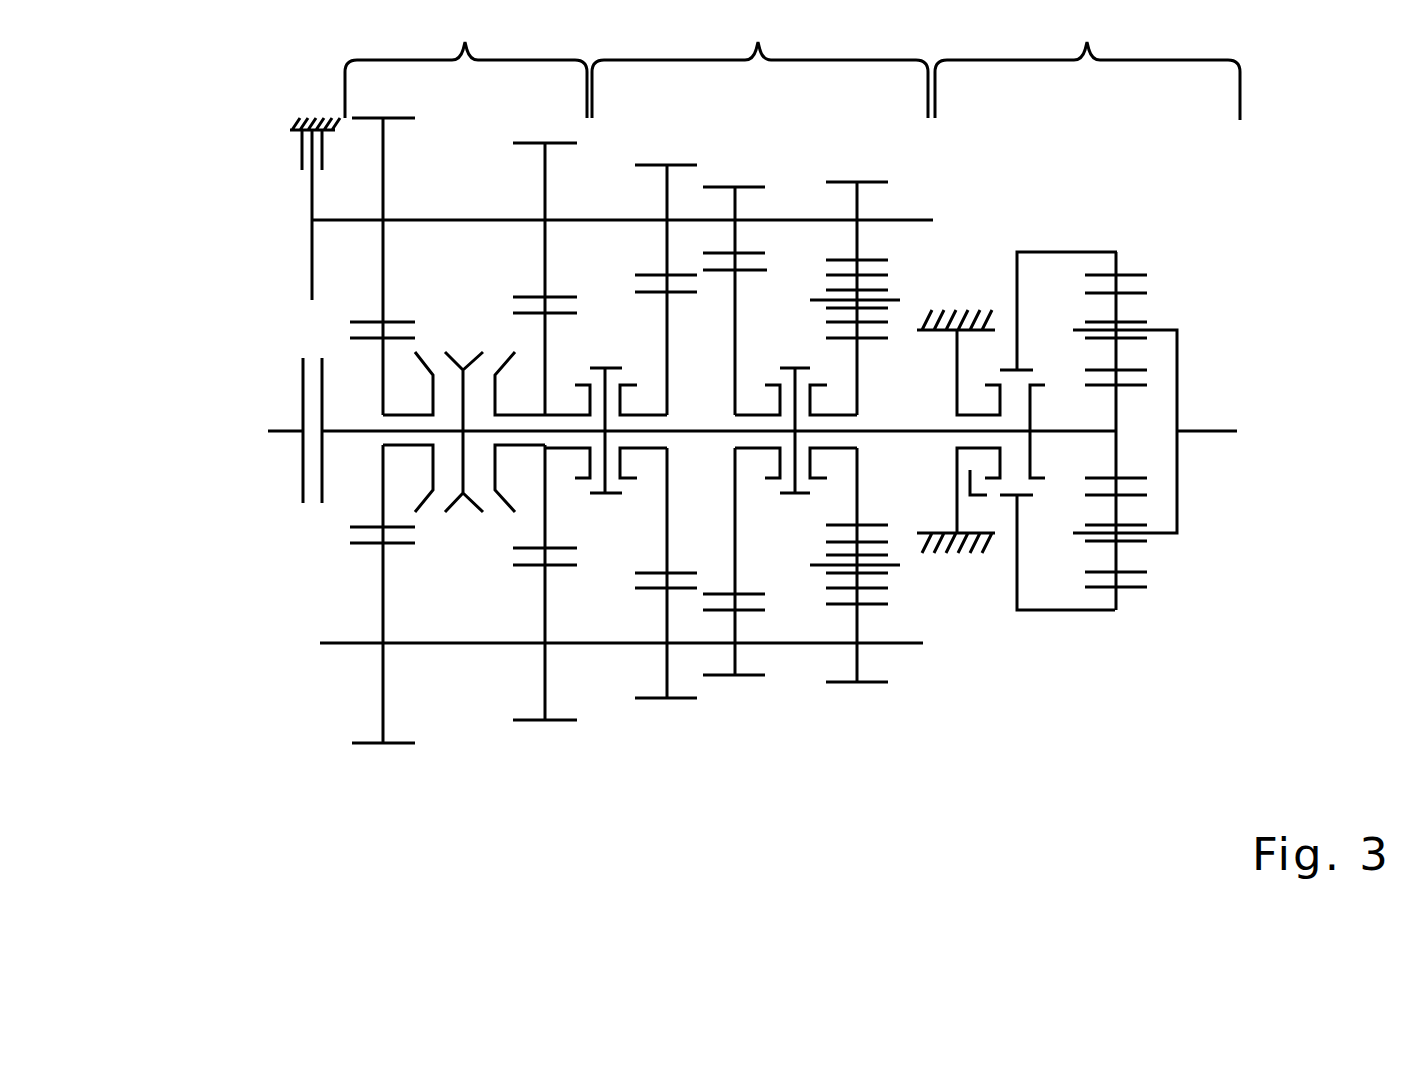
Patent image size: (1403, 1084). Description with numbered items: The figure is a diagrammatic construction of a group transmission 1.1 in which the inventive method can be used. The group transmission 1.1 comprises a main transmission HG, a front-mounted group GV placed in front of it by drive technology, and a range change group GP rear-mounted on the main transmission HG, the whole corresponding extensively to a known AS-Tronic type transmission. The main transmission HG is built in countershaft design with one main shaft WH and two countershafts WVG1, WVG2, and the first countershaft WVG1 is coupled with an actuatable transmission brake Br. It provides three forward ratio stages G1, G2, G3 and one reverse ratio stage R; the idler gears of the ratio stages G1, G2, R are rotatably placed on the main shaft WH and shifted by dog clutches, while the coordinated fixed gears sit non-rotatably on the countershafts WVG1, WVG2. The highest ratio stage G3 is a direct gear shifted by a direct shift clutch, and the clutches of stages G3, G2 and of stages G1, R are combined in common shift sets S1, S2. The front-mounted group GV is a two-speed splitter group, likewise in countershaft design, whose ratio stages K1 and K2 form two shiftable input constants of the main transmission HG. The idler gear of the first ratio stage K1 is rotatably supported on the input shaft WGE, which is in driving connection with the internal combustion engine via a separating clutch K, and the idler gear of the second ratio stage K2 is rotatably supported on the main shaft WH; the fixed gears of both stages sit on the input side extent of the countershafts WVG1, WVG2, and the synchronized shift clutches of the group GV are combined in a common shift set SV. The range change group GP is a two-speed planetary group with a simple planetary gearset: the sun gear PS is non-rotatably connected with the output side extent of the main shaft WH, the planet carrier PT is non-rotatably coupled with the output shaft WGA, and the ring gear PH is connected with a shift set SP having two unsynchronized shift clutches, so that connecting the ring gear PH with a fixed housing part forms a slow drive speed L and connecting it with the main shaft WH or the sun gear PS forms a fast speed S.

The front-mounted group GV is at (466, 61).
The main transmission HG is at (760, 61).
The range change group GP is at (1087, 62).
The transmission brake Br is at (293, 209).
The first ratio stage K1 is at (376, 430).
The second ratio stage K2 is at (536, 431).
The separating clutch K is at (295, 429).
The shift set SV is at (464, 412).
The third ratio stage G3 is at (554, 276).
The second ratio stage G2 is at (666, 415).
The first ratio stage G1 is at (735, 408).
The reverse ratio stage R is at (855, 413).
The shift set S1 is at (606, 412).
The shift set S2 is at (796, 412).
The shift set SP is at (990, 394).
The fast speed S is at (994, 500).
The slow drive speed L is at (978, 482).
The ring gear PH is at (1067, 251).
The planet carrier PT is at (1160, 330).
The sun gear PS is at (1117, 412).
The first countershaft WVG1 is at (908, 220).
The second countershaft WVG2 is at (783, 643).
The main shaft WH is at (903, 432).
The input shaft WGE is at (355, 432).
The output shaft WGA is at (1203, 432).
The group transmission 1.1 is at (1086, 660).